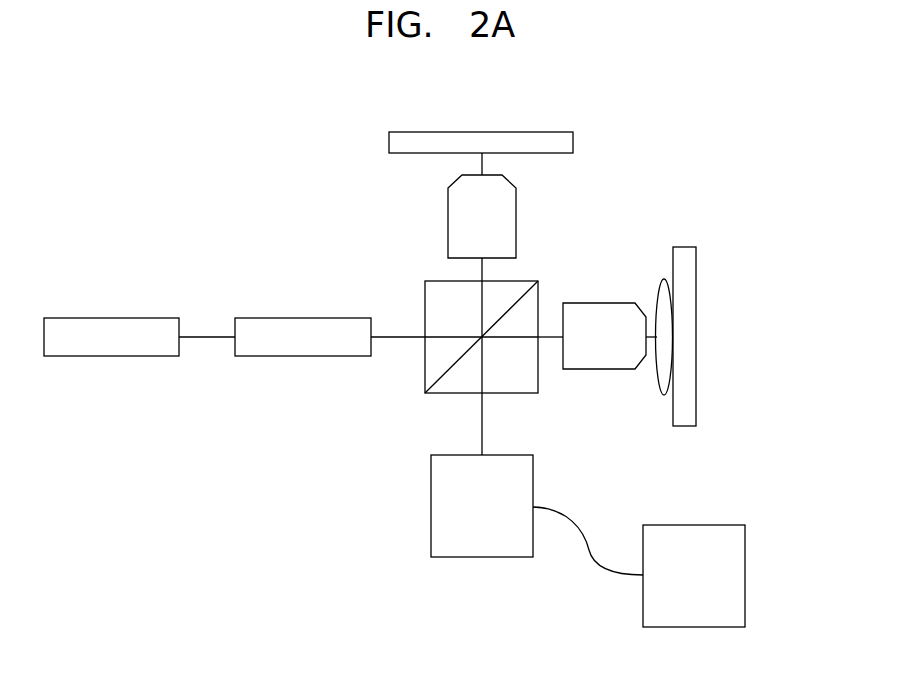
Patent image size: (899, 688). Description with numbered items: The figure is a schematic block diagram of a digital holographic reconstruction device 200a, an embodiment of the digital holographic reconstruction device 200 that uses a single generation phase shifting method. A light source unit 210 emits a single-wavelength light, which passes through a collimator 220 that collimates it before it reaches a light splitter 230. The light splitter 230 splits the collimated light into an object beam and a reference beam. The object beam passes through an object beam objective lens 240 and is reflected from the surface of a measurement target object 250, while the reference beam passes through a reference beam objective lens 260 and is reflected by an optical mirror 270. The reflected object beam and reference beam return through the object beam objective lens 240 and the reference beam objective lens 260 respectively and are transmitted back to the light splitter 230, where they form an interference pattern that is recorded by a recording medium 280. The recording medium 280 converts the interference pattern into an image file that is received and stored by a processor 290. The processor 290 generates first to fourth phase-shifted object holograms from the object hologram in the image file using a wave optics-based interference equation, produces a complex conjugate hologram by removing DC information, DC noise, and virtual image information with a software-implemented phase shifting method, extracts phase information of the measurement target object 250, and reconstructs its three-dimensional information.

The digital holographic reconstruction device 200a is at (700, 110).
The digital holographic reconstruction device 200 is at (444, 373).
The light source unit 210 is at (110, 356).
The collimator 220 is at (303, 356).
The light splitter 230 is at (425, 291).
The object beam objective lens 240 is at (598, 369).
The measurement target object 250 is at (696, 240).
The reference beam objective lens 260 is at (516, 224).
The optical mirror 270 is at (573, 142).
The recording medium 280 is at (481, 557).
The processor 290 is at (693, 627).